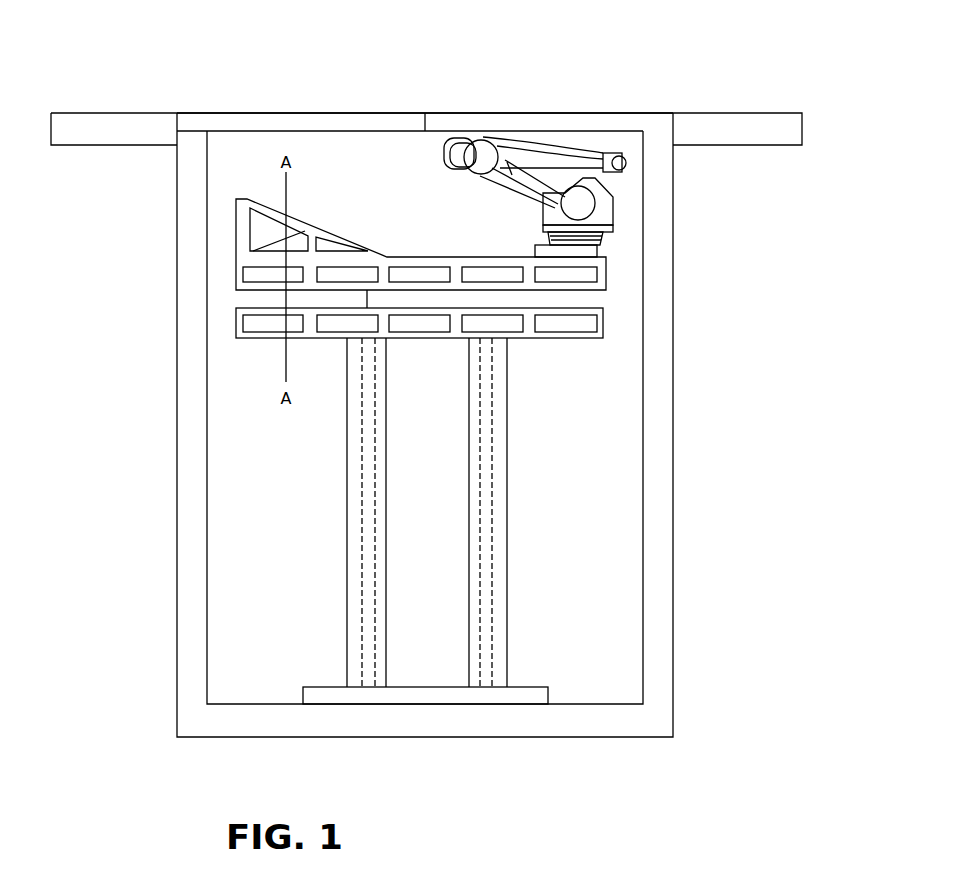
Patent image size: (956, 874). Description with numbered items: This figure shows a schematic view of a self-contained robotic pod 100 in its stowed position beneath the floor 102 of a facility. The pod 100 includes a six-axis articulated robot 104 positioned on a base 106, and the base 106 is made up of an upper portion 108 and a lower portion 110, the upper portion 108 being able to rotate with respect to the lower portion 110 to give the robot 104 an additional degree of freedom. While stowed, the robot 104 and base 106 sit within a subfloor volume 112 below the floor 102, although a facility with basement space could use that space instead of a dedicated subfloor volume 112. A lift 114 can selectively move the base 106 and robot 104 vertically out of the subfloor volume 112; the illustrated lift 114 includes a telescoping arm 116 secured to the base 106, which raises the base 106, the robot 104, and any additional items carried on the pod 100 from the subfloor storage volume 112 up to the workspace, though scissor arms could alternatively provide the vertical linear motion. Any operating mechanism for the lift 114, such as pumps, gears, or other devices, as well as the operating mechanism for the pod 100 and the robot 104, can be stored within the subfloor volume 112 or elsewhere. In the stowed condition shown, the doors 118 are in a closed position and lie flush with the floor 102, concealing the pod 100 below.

The robotic pod 100 is at (410, 216).
The floor 102 is at (737, 113).
The robot 104 is at (590, 203).
The base 106 is at (236, 322).
The upper portion 108 is at (444, 273).
The lower portion 110 is at (566, 338).
The subfloor volume 112 is at (602, 607).
The lift 114 is at (412, 540).
The telescoping arm 116 is at (480, 498).
The doors 118 is at (305, 113).